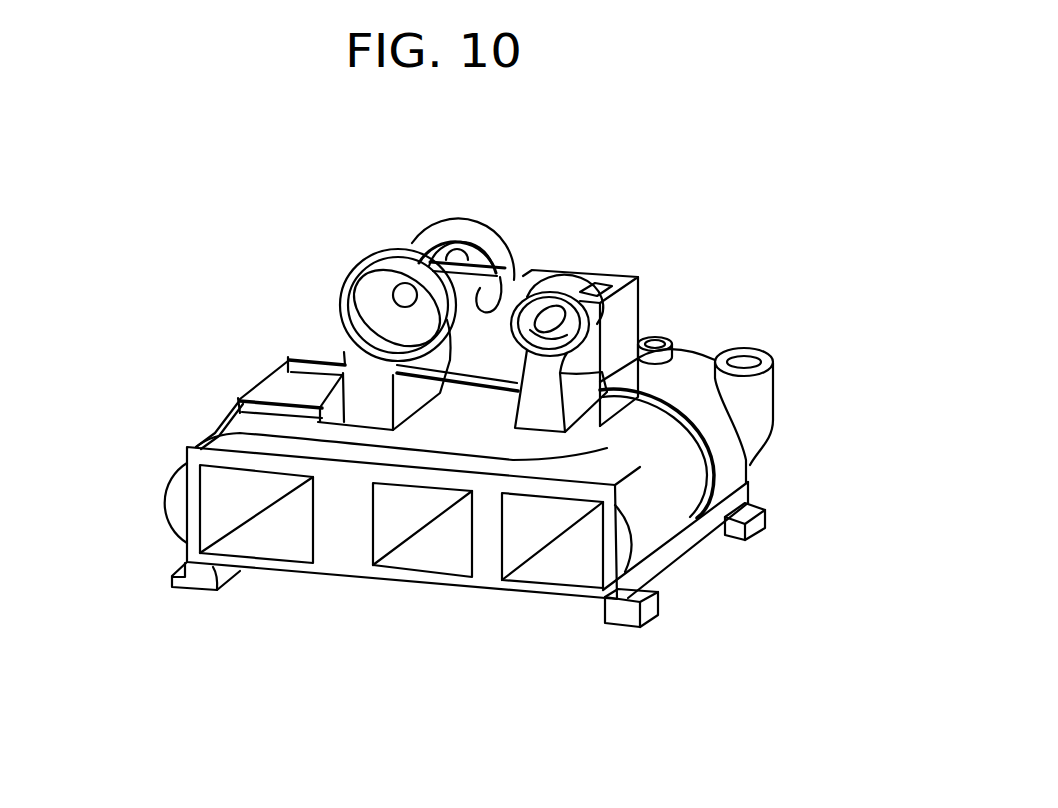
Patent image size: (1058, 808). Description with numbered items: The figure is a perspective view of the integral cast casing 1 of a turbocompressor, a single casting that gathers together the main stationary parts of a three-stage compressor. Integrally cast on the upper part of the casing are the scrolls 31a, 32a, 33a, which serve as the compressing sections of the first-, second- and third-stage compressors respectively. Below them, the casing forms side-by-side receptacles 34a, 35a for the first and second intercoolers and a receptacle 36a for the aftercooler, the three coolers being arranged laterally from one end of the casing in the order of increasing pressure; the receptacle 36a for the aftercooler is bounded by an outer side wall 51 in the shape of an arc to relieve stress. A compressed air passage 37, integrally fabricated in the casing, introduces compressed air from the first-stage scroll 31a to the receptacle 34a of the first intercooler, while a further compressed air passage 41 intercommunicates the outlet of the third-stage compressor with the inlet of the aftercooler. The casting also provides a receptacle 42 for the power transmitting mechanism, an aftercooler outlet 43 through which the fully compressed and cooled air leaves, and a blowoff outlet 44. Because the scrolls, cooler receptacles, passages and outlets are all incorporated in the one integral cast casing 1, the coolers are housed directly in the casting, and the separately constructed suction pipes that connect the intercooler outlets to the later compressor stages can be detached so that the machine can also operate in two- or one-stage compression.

The integral cast casing 1 is at (204, 412).
The scroll 31a is at (382, 262).
The scroll 32a is at (478, 198).
The scroll 33a is at (553, 288).
The receptacle 34a is at (287, 553).
The receptacle 35a is at (428, 555).
The receptacle 36a is at (560, 573).
The compressed air passage 37 is at (342, 392).
The compressed air passage 41 is at (532, 393).
The receptacle 42 is at (603, 283).
The aftercooler outlet 43 is at (744, 358).
The blowoff outlet 44 is at (667, 334).
The outer side wall 51 is at (658, 487).